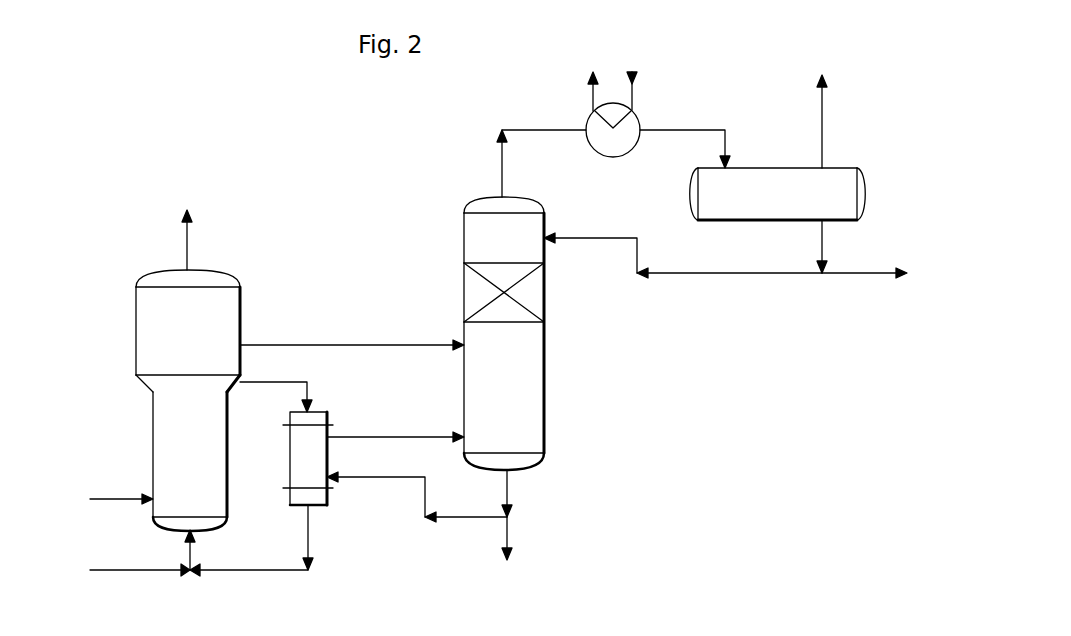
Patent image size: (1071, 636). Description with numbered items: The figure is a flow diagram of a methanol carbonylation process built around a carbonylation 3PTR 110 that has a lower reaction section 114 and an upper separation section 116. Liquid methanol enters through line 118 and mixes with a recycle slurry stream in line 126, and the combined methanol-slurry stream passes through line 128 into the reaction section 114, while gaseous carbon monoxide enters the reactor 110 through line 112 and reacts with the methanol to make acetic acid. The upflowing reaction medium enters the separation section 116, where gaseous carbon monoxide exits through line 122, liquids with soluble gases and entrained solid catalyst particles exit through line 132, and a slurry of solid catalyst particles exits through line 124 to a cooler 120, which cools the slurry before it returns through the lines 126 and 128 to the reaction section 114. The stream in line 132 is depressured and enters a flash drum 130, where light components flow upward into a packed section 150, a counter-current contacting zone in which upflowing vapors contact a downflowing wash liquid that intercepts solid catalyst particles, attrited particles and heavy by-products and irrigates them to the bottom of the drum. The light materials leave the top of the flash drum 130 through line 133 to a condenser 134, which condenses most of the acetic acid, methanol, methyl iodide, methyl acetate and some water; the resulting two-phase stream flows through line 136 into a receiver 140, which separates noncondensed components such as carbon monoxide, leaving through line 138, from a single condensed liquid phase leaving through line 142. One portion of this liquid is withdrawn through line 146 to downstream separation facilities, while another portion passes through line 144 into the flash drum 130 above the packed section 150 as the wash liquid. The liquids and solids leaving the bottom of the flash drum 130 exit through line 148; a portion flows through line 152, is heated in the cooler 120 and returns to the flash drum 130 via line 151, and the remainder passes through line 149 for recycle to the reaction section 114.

The carbonylation 3PTR 110 is at (120, 295).
The line 112 is at (140, 498).
The lower reaction section 114 is at (212, 458).
The upper separation section 116 is at (212, 348).
The line 118 is at (145, 572).
The cooler 120 is at (290, 470).
The line 122 is at (188, 242).
The line 124 is at (309, 392).
The line 126 is at (310, 545).
The line 128 is at (192, 548).
The flash drum 130 is at (440, 208).
The line 132 is at (282, 345).
The line 133 is at (500, 157).
The condenser 134 is at (588, 122).
The line 136 is at (654, 128).
The line 138 is at (823, 102).
The receiver 140 is at (840, 168).
The line 142 is at (825, 248).
The line 144 is at (665, 275).
The line 146 is at (862, 275).
The line 148 is at (509, 488).
The line 149 is at (509, 535).
The packed section 150 is at (530, 286).
The line 151 is at (368, 437).
The line 152 is at (460, 504).